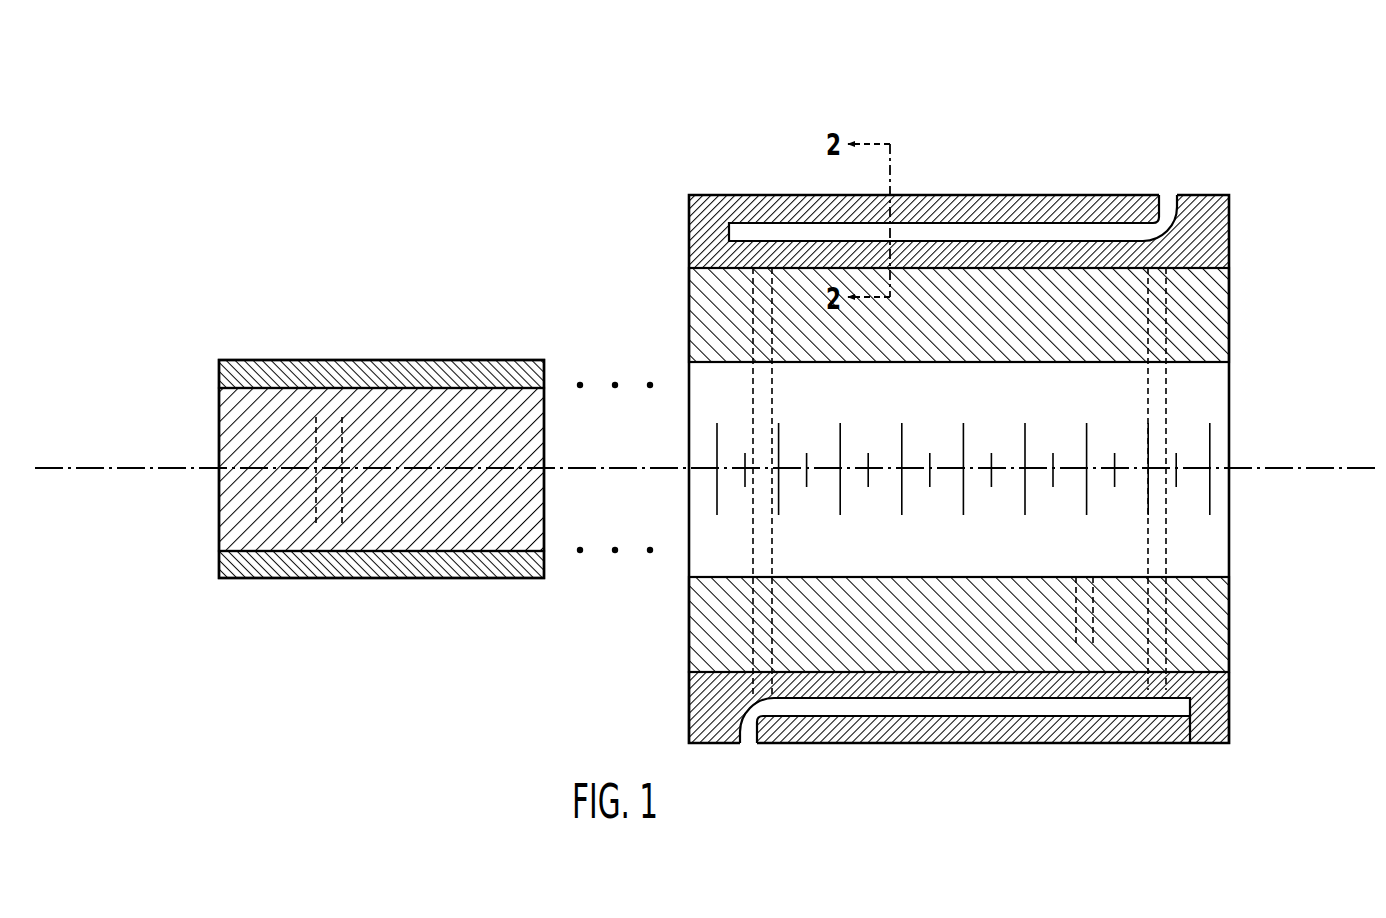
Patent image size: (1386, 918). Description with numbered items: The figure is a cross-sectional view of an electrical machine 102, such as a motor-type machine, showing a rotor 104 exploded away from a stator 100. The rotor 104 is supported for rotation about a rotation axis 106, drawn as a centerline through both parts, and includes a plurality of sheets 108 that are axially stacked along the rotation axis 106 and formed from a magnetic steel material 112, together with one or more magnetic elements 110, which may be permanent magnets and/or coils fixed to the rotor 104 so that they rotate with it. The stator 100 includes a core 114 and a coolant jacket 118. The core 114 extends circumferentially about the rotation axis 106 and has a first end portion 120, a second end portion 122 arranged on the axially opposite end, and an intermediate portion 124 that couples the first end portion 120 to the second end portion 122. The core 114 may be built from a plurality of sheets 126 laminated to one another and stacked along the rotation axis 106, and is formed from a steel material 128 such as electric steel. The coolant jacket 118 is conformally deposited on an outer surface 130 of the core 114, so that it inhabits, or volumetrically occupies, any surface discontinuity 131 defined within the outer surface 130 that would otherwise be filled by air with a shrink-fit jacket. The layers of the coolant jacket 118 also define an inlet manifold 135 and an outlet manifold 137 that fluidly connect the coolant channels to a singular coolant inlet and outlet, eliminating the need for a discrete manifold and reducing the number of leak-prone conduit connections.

The stator 100 is at (1055, 126).
The electrical machine 102 is at (193, 742).
The rotor 104 is at (368, 326).
The rotation axis 106 is at (70, 470).
The plurality of sheets 108 is at (343, 484).
The magnetic element 110 is at (431, 360).
The magnetic steel material 112 is at (435, 517).
The core 114 is at (1230, 292).
The coolant jacket 118 is at (955, 197).
The first end portion 120 is at (721, 762).
The second end portion 122 is at (1180, 757).
The intermediate portion 124 is at (945, 764).
The plurality of sheets 126 is at (1077, 618).
The steel material 128 is at (720, 621).
The outer surface 130 is at (1042, 242).
The surface discontinuity 131 is at (975, 269).
The inlet manifold 135 is at (1160, 297).
The outlet manifold 137 is at (777, 657).